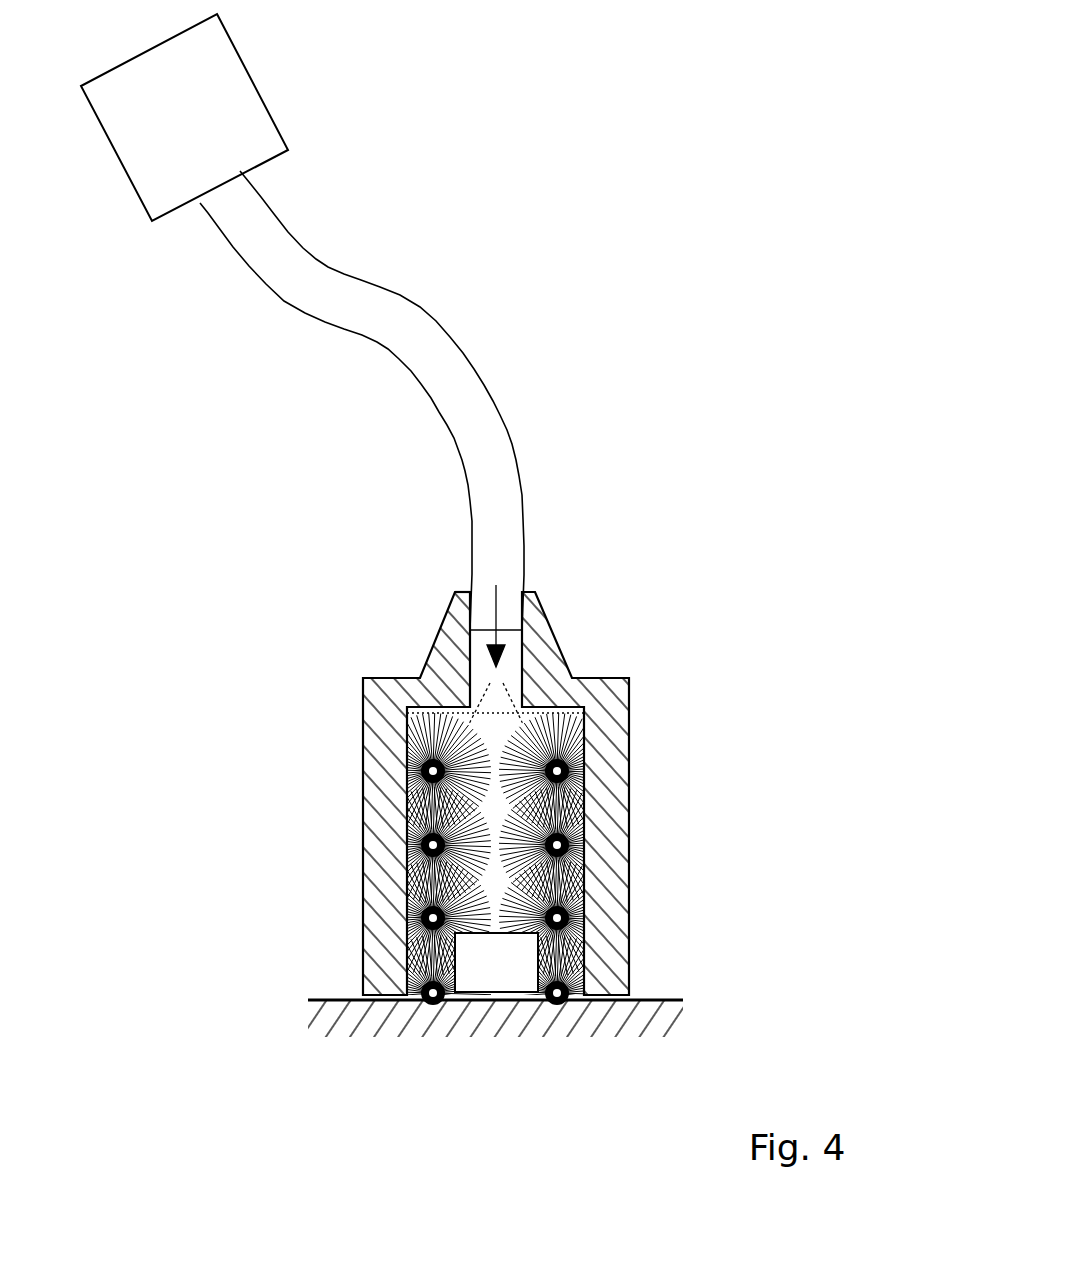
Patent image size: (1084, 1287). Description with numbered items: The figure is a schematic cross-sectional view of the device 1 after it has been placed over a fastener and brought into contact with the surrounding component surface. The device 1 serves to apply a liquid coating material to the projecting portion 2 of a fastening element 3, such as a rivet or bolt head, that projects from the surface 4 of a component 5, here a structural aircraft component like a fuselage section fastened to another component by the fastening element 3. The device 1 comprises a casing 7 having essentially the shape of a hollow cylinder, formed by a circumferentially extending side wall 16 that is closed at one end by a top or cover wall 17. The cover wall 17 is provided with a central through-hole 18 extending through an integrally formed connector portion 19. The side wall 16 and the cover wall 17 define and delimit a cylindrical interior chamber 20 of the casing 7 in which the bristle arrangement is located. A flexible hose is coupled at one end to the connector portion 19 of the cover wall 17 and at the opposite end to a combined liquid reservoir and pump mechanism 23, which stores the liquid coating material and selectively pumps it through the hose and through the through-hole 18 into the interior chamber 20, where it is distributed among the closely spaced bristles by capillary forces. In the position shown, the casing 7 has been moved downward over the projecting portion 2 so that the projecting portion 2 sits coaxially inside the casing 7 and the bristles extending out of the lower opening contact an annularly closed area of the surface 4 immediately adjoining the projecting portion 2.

The device 1 is at (443, 563).
The projecting portion 2 is at (515, 968).
The fastening element 3 is at (491, 1035).
The surface 4 is at (487, 1025).
The component 5 is at (330, 1022).
The casing 7 is at (484, 823).
The side wall 16 is at (612, 852).
The cover wall 17 is at (517, 793).
The through-hole 18 is at (470, 591).
The connector portion 19 is at (535, 632).
The interior chamber 20 is at (452, 370).
The combined liquid reservoir and pump mechanism 23 is at (232, 87).